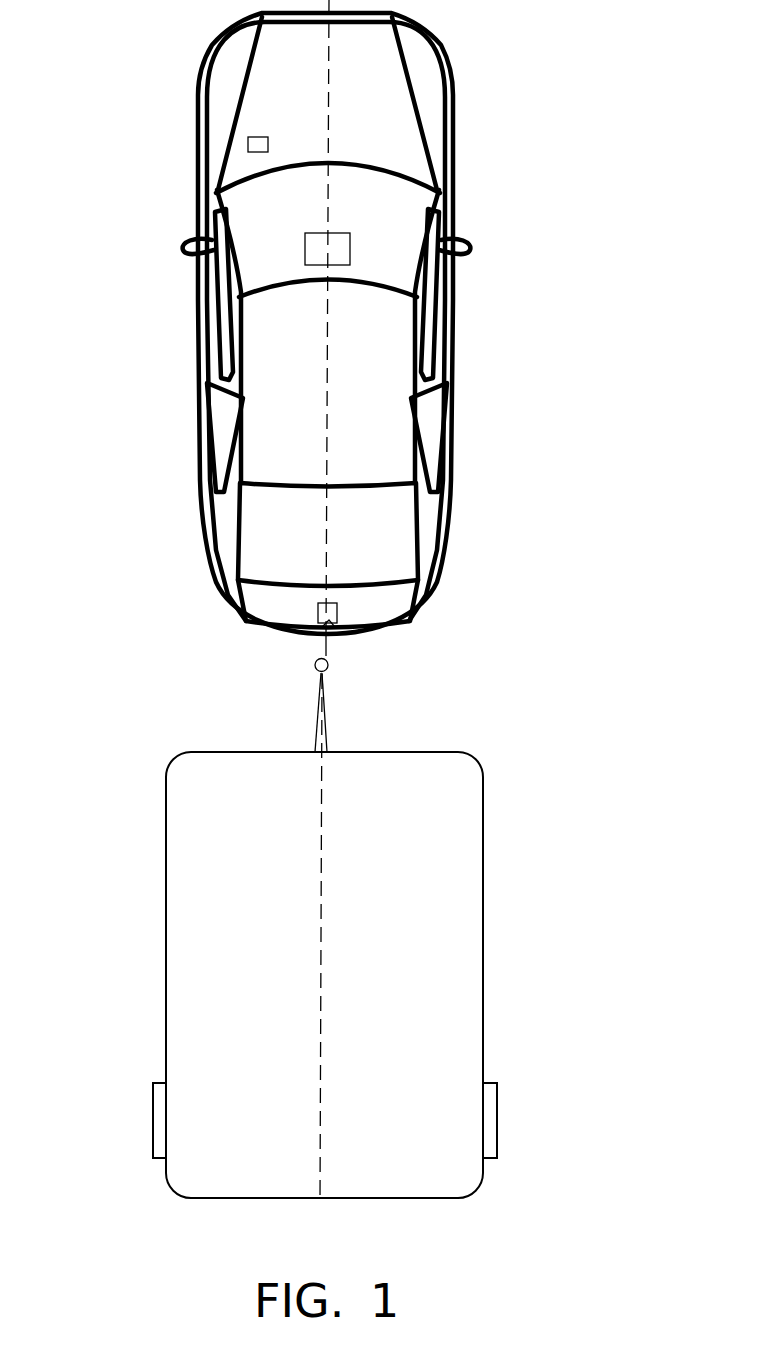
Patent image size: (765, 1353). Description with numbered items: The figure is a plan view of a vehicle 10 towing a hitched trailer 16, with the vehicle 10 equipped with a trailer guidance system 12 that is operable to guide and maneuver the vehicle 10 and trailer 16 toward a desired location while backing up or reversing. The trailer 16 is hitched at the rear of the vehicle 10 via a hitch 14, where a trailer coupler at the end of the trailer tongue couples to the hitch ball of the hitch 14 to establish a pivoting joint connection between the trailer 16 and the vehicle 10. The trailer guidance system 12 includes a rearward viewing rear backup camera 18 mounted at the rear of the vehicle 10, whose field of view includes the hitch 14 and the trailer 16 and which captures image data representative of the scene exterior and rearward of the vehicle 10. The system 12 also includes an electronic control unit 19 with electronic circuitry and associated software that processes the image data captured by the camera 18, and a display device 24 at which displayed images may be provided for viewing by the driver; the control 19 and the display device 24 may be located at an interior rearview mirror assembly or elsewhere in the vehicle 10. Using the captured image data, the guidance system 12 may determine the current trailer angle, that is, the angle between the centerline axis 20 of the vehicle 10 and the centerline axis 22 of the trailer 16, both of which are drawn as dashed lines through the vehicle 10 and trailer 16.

The vehicle 10 is at (463, 103).
The trailer guidance system 12 is at (160, 590).
The hitch 14 is at (329, 666).
The trailer 16 is at (190, 778).
The rear backup camera 18 is at (337, 617).
The electronic control unit 19 is at (268, 142).
The centerline axis of the vehicle 20 is at (329, 416).
The centerline axis of the trailer 22 is at (320, 1209).
The display device 24 is at (350, 238).